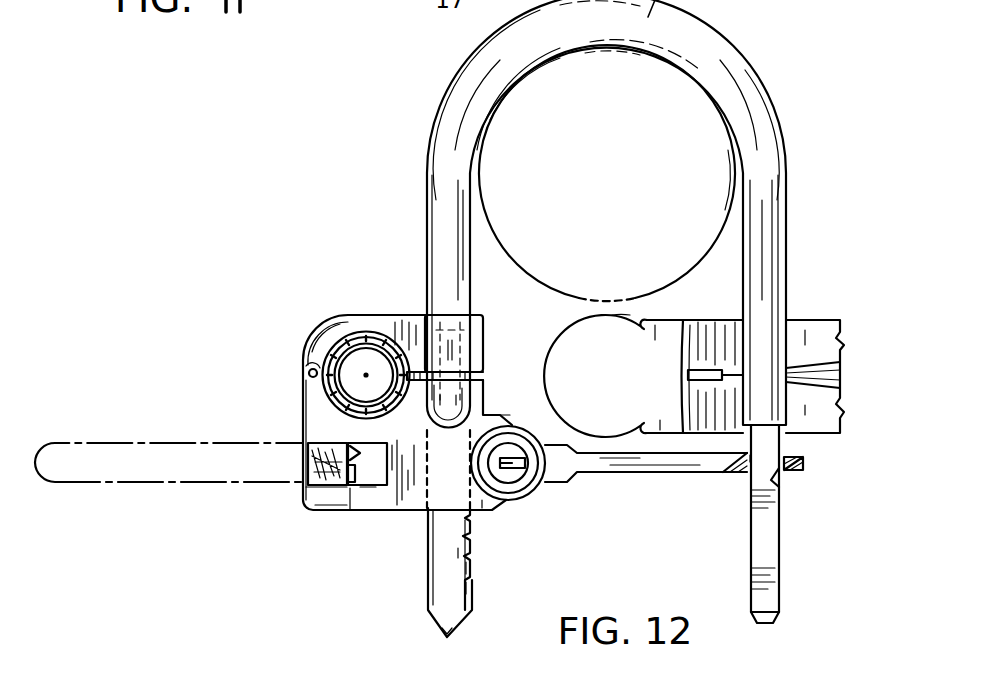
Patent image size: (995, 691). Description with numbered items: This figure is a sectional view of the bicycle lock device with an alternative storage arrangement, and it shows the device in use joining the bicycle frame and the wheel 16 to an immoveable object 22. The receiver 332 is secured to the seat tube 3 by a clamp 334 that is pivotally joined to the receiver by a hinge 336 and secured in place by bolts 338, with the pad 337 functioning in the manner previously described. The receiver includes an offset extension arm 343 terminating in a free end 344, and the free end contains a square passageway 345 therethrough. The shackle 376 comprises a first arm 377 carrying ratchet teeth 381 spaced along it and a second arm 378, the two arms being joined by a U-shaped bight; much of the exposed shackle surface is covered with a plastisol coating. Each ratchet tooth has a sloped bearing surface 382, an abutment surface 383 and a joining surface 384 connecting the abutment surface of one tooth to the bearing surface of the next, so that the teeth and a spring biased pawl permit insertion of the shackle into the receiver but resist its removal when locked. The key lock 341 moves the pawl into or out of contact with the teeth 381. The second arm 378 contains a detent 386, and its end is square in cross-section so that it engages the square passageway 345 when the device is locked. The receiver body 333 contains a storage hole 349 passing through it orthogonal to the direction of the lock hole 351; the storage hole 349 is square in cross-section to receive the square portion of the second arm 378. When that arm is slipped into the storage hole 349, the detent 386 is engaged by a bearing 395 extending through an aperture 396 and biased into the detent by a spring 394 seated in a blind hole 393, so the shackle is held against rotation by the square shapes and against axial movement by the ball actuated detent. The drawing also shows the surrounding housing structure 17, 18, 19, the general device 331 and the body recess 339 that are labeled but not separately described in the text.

The seat tube 3 is at (368, 340).
The wheel 16 is at (621, 302).
The circular cam portion 17 is at (590, 316).
The housing 18 is at (672, 318).
The housing extension 19 is at (812, 360).
The immoveable object 22 is at (715, 100).
The lock assembly 331 is at (367, 238).
The receiver 332 is at (316, 513).
The receiver body 333 is at (358, 487).
The clamp 334 is at (347, 325).
The hinge 336 is at (308, 372).
The pad 337 is at (338, 332).
The bolts 338 is at (450, 343).
The body recess 339 is at (517, 426).
The key lock 341 is at (517, 468).
The offset extension arm 343 is at (652, 465).
The free end 344 is at (807, 463).
The square passageway 345 is at (773, 478).
The storage hole 349 is at (377, 487).
The lock hole 351 is at (488, 512).
The shackle 376 is at (733, 44).
The first arm 377 is at (438, 243).
The second arm 378 is at (783, 256).
The ratchet teeth 381 is at (481, 568).
The sloped bearing surface 382 is at (470, 543).
The abutment surface 383 is at (458, 553).
The joining surface 384 is at (477, 577).
The detent 386 is at (748, 453).
The blind hole 393 is at (330, 453).
The spring 394 is at (308, 488).
The bearing 395 is at (352, 447).
The aperture 396 is at (358, 487).